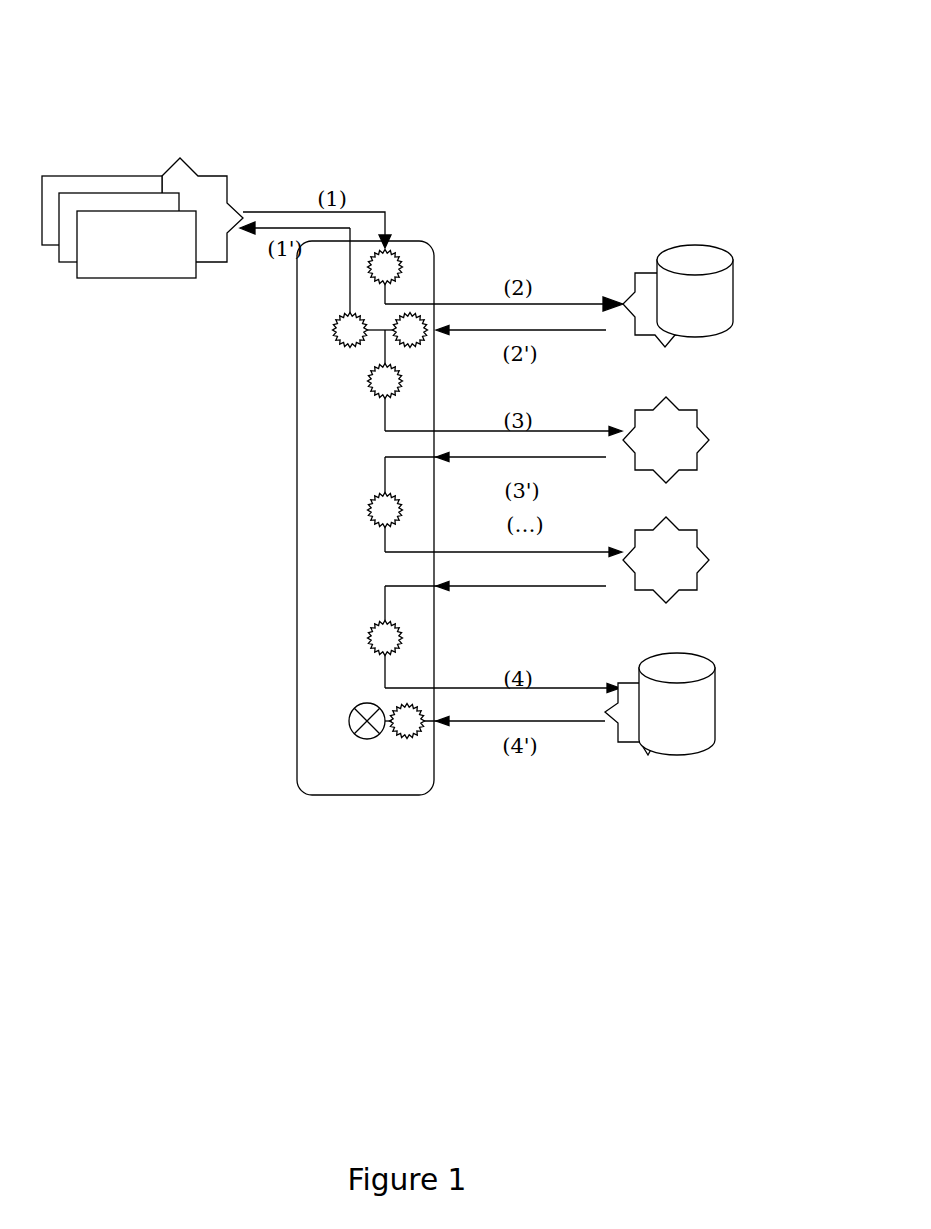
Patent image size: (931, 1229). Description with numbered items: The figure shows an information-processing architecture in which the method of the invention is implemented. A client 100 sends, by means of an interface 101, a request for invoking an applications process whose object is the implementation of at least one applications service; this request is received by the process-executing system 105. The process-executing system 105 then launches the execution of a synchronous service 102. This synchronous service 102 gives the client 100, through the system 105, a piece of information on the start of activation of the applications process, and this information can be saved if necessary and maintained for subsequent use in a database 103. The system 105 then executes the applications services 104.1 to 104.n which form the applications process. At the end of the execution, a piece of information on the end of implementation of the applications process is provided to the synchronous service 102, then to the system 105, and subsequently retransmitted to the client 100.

The client 100 is at (59, 176).
The interface 101 is at (180, 158).
The synchronous service 102 is at (647, 273).
The database 103 is at (693, 246).
The applications service 104.1 is at (708, 440).
The applications service 104.n is at (708, 560).
The process-executing system 105 is at (297, 487).